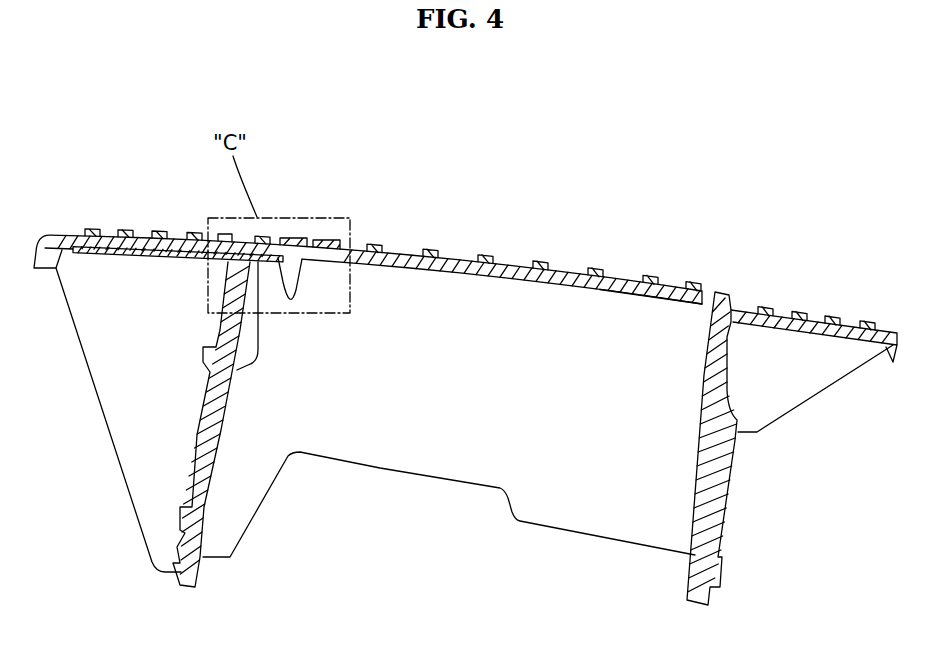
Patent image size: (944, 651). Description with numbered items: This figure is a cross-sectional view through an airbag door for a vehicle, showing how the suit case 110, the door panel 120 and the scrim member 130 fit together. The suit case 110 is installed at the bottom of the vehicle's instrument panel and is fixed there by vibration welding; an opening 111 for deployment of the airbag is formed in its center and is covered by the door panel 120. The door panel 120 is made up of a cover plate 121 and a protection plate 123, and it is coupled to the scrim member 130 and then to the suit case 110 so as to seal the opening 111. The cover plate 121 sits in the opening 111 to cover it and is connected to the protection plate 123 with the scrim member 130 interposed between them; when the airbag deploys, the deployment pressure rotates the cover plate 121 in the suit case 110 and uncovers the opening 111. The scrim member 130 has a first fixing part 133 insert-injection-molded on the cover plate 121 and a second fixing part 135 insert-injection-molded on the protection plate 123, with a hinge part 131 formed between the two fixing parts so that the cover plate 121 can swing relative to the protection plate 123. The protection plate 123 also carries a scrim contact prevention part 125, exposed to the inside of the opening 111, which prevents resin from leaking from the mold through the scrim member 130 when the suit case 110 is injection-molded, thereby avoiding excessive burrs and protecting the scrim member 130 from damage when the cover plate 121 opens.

The suit case 110 is at (720, 493).
The opening 111 is at (314, 238).
The door panel 120 is at (570, 260).
The cover plate 121 is at (627, 279).
The protection plate 123 is at (83, 247).
The scrim contact prevention part 125 is at (282, 238).
The scrim member 130 is at (316, 292).
The hinge part 131 is at (296, 304).
The first fixing part 133 is at (627, 296).
The second fixing part 135 is at (127, 256).